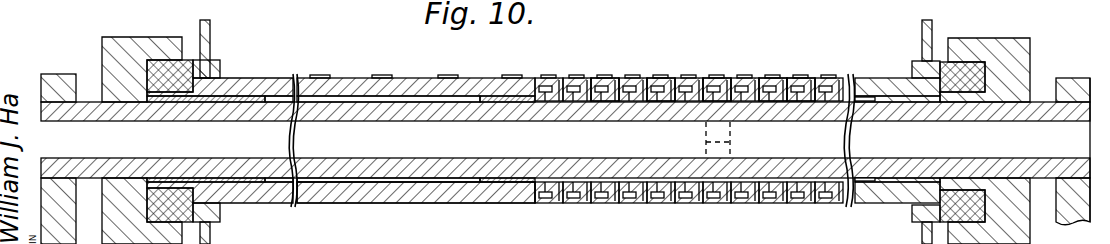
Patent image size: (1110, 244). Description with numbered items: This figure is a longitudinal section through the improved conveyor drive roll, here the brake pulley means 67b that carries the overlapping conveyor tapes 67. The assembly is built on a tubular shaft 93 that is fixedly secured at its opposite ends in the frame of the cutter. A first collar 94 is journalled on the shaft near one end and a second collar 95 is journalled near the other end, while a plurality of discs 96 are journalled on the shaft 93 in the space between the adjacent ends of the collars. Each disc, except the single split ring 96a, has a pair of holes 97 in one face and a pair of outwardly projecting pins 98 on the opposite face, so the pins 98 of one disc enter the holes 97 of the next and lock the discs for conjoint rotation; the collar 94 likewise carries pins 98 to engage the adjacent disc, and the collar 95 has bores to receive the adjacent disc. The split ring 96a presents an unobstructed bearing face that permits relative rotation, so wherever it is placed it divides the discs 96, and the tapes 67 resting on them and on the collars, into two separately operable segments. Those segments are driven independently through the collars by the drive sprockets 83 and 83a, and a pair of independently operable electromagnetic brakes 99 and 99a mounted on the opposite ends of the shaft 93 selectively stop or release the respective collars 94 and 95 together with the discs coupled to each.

The tubular shaft 93 is at (410, 110).
The first collar 94 is at (354, 80).
The second collar 95 is at (878, 78).
The discs 96 is at (654, 74).
The split ring 96a is at (720, 78).
The holes 97 is at (416, 213).
The pins 98 is at (612, 101).
The brake 99 is at (131, 45).
The brake 99a is at (1022, 46).
The drive sprocket 83 is at (210, 36).
The drive sprocket 83a is at (922, 24).
The tapes 67 is at (564, 74).
The brake pulley means 67b is at (264, 77).